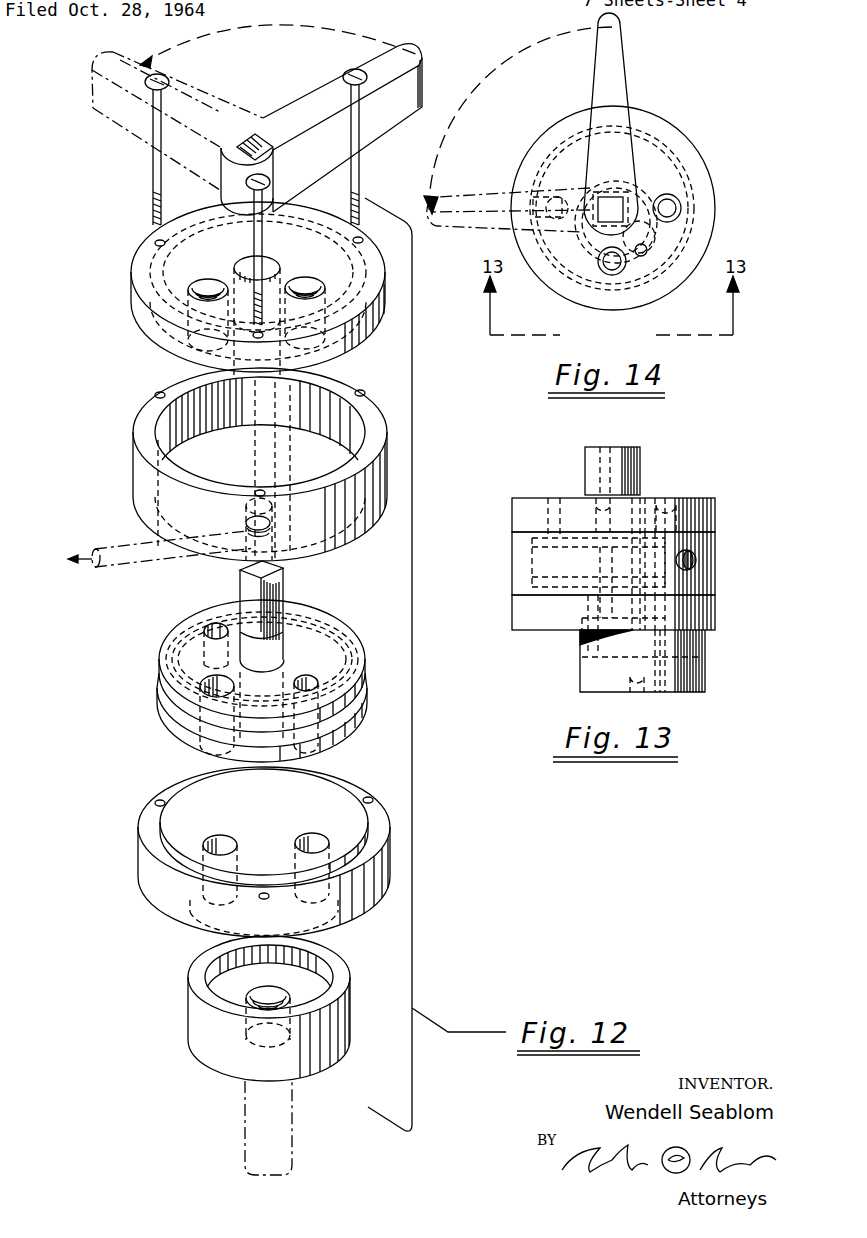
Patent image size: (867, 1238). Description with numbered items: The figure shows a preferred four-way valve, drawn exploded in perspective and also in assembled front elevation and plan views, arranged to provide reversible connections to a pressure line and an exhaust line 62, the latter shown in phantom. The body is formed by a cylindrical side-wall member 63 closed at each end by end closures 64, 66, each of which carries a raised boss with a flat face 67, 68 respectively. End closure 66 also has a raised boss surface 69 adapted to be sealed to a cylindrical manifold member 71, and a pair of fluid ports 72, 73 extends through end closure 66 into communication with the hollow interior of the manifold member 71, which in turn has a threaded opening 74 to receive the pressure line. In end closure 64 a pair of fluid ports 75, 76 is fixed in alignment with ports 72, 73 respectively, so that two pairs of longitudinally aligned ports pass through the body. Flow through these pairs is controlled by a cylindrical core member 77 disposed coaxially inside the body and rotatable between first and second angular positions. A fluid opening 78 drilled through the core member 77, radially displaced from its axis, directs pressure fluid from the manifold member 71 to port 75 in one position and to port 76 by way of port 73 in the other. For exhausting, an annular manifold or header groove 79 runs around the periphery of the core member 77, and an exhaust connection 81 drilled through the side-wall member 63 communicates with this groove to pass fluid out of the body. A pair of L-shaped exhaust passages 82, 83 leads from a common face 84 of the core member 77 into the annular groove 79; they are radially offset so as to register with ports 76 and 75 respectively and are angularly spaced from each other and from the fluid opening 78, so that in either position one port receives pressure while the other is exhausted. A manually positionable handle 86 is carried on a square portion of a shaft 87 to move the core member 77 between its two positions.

In FIG. 12, the exhaust line 62 is at (142, 570).
In FIG. 12, the cylindrical side-wall member 63 is at (136, 492).
In FIG. 14, the cylindrical side-wall member 63 is at (686, 132).
In FIG. 13, the cylindrical side-wall member 63 is at (718, 547).
In FIG. 12, the end closure 64 is at (133, 298).
In FIG. 13, the end closure 64 is at (718, 510).
In FIG. 12, the end closure 66 is at (140, 870).
In FIG. 13, the end closure 66 is at (718, 612).
In FIG. 12, the flat face 67 is at (175, 340).
In FIG. 13, the flat face 67 is at (532, 540).
In FIG. 12, the flat face 68 is at (252, 800).
In FIG. 13, the flat face 68 is at (565, 632).
In FIG. 12, the raised boss surface 69 is at (215, 912).
In FIG. 13, the raised boss surface 69 is at (657, 690).
In FIG. 12, the cylindrical manifold member 71 is at (190, 1010).
In FIG. 14, the cylindrical manifold member 71 is at (702, 224).
In FIG. 13, the cylindrical manifold member 71 is at (706, 668).
In FIG. 12, the fluid port 72 is at (228, 842).
In FIG. 13, the fluid port 72 is at (586, 675).
In FIG. 12, the fluid port 73 is at (320, 842).
In FIG. 12, the threaded opening 74 is at (282, 993).
In FIG. 14, the threaded opening 74 is at (643, 254).
In FIG. 13, the threaded opening 74 is at (636, 690).
In FIG. 12, the fluid port 75 is at (215, 283).
In FIG. 14, the fluid port 75 is at (613, 270).
In FIG. 13, the fluid port 75 is at (598, 505).
In FIG. 12, the fluid port 76 is at (310, 282).
In FIG. 14, the fluid port 76 is at (672, 198).
In FIG. 13, the fluid port 76 is at (672, 500).
In FIG. 12, the cylindrical core member 77 is at (160, 688).
In FIG. 14, the cylindrical core member 77 is at (560, 140).
In FIG. 12, the fluid opening 78 is at (232, 686).
In FIG. 13, the fluid opening 78 is at (610, 567).
In FIG. 12, the annular manifold groove 79 is at (180, 728).
In FIG. 14, the annular manifold groove 79 is at (572, 282).
In FIG. 13, the annular manifold groove 79 is at (532, 572).
In FIG. 12, the exhaust connection 81 is at (250, 523).
In FIG. 14, the exhaust connection 81 is at (648, 255).
In FIG. 13, the exhaust connection 81 is at (694, 560).
In FIG. 12, the L-shaped exhaust passage 82 is at (305, 676).
In FIG. 14, the L-shaped exhaust passage 82 is at (660, 194).
In FIG. 13, the L-shaped exhaust passage 82 is at (660, 500).
In FIG. 12, the L-shaped exhaust passage 83 is at (213, 623).
In FIG. 14, the L-shaped exhaust passage 83 is at (557, 198).
In FIG. 13, the L-shaped exhaust passage 83 is at (562, 537).
In FIG. 12, the common face 84 is at (338, 645).
In FIG. 12, the handle 86 is at (312, 132).
In FIG. 14, the handle 86 is at (618, 97).
In FIG. 13, the handle 86 is at (640, 462).
In FIG. 12, the shaft 87 is at (283, 596).
In FIG. 14, the shaft 87 is at (610, 209).